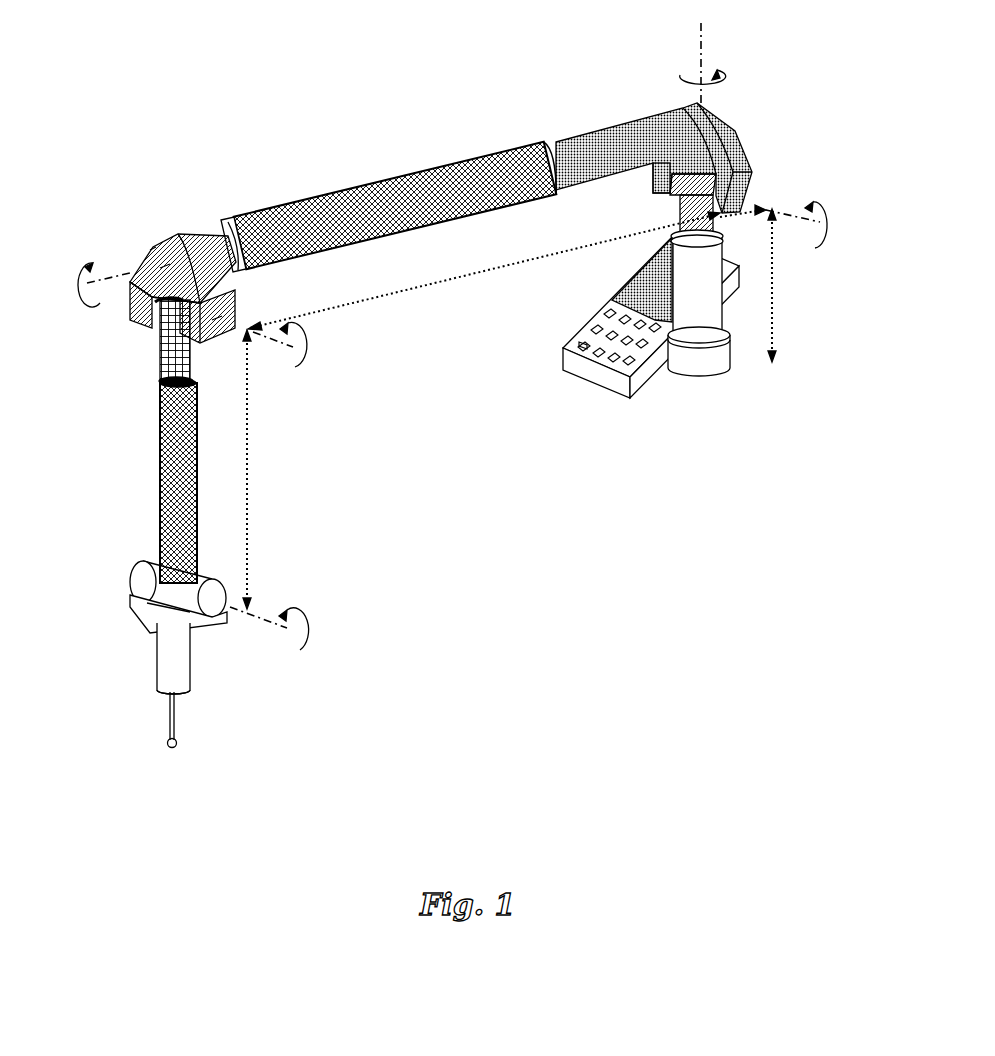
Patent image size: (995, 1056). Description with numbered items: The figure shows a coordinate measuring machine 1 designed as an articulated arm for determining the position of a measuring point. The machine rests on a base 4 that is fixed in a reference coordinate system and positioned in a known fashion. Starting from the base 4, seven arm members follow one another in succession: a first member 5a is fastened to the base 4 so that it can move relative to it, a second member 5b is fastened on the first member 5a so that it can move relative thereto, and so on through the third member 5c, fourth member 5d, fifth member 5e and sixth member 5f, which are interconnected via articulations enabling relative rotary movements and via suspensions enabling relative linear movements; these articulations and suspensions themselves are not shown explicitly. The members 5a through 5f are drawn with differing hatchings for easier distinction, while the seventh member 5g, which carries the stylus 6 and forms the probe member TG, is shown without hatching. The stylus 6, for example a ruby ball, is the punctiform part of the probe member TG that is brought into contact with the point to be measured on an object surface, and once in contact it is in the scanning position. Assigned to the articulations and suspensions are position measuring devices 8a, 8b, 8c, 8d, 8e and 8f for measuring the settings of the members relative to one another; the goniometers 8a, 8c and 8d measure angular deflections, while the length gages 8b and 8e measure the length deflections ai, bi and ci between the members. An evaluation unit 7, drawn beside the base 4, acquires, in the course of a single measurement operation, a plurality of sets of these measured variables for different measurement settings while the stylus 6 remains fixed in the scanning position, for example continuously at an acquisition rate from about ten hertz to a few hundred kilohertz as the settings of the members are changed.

The coordinate measuring machine 1 is at (264, 62).
The base 4 is at (698, 315).
The first arm member 5a is at (678, 219).
The second arm member 5b is at (627, 123).
The third arm member 5c is at (458, 163).
The fourth arm member 5d is at (173, 235).
The fifth arm member 5e is at (177, 350).
The sixth arm member 5f is at (172, 470).
The seventh arm member 5g is at (168, 652).
The stylus 6 is at (175, 748).
The evaluation unit 7 is at (595, 373).
The optoelectronic goniometer 8a is at (653, 183).
The optoelectronic length gage 8b is at (547, 143).
The optoelectronic goniometer 8c is at (232, 220).
The optoelectronic goniometer 8d is at (237, 300).
The optoelectronic length gage 8e is at (195, 385).
The position measuring device 8f is at (213, 603).
The probe member TG is at (180, 672).
The length deflection ai is at (773, 292).
The length deflection bi is at (458, 280).
The length deflection ci is at (247, 473).